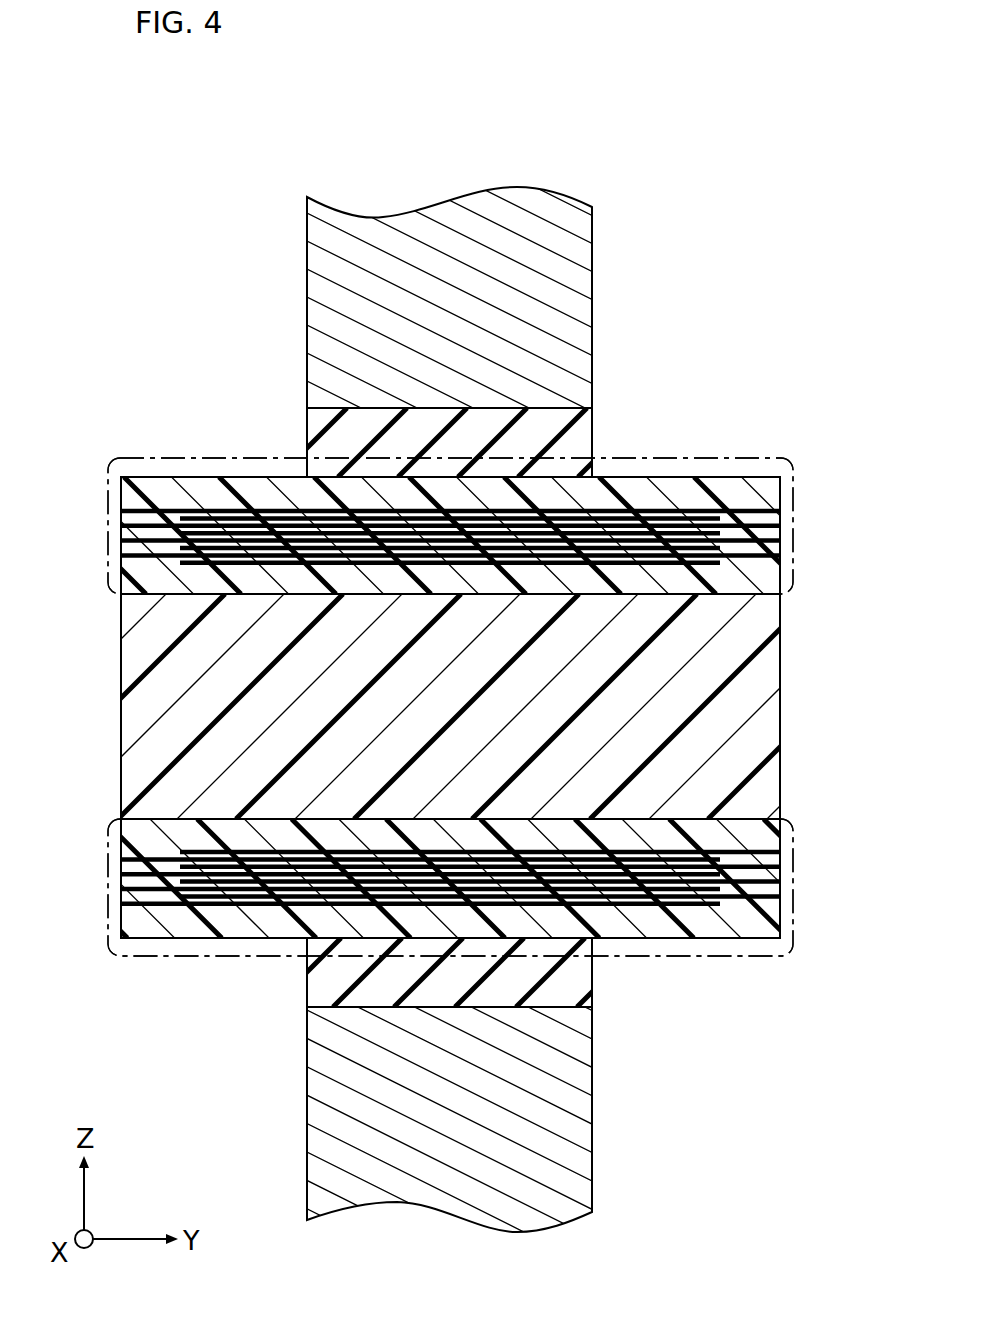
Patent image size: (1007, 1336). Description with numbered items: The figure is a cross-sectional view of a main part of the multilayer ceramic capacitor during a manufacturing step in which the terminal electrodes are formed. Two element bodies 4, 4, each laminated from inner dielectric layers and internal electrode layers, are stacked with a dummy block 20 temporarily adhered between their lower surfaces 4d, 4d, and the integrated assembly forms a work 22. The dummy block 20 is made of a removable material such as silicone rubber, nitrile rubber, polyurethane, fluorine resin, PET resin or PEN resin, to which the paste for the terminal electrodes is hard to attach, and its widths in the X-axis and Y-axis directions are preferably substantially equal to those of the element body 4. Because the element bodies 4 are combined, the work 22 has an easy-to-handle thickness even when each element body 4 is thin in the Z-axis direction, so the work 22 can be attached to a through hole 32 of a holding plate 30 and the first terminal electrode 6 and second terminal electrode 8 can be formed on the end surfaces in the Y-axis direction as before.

The holding plate 30 is at (562, 297).
The through hole 32 is at (378, 494).
The element body 4 is at (639, 472).
The lower surface 4d is at (193, 595).
The first terminal electrode 6 is at (138, 458).
The second terminal electrode 8 is at (708, 458).
The dummy block 20 is at (496, 706).
The work 22 is at (786, 628).